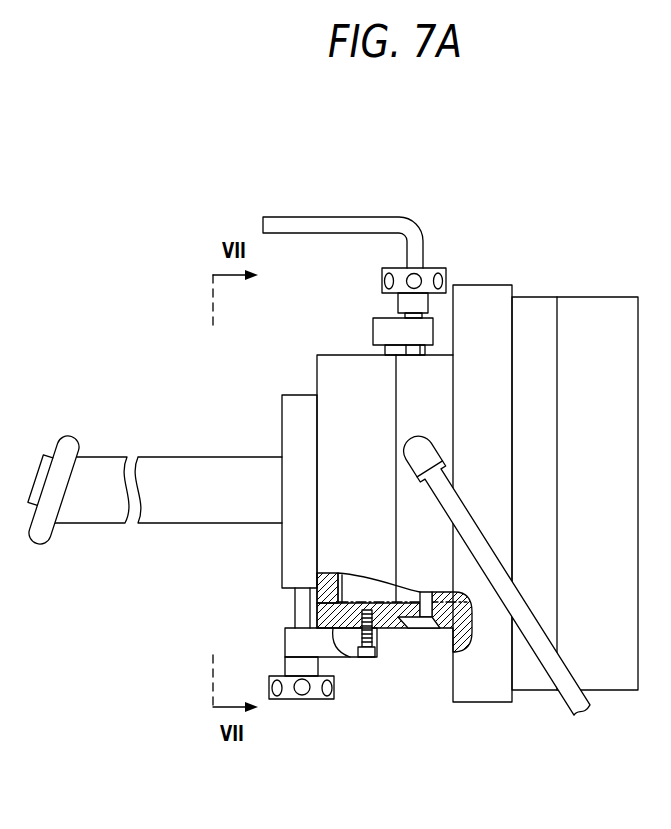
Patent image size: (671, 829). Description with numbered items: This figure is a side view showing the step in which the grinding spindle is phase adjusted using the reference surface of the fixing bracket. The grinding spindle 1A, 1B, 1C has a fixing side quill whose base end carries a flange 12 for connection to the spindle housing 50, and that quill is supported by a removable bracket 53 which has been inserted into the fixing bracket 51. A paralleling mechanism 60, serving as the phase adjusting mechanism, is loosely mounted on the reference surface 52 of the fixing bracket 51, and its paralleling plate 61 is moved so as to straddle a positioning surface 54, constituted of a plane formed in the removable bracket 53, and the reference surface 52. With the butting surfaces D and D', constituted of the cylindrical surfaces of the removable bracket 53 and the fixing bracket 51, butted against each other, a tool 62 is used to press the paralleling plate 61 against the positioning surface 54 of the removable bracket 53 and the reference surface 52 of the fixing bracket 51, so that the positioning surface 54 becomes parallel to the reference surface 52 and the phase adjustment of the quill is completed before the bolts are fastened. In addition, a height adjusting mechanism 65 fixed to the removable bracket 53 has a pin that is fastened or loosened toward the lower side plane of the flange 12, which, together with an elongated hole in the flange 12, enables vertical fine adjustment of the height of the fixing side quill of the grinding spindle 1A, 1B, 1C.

The grinding spindle 1A is at (155, 522).
The grinding spindle 1B is at (155, 490).
The grinding spindle 1C is at (167, 535).
The flange 12 is at (293, 423).
The spindle housing 50 is at (600, 297).
The fixing bracket 51 is at (480, 285).
The reference surface 52 is at (442, 353).
The removable bracket 53 is at (308, 371).
The positioning surface 54 is at (336, 355).
The paralleling mechanism 60 is at (436, 256).
The paralleling plate 61 is at (380, 332).
The tool 62 is at (327, 222).
The height adjusting mechanism 65 is at (302, 667).
The butting surface D is at (415, 670).
The butting surface D' is at (419, 622).